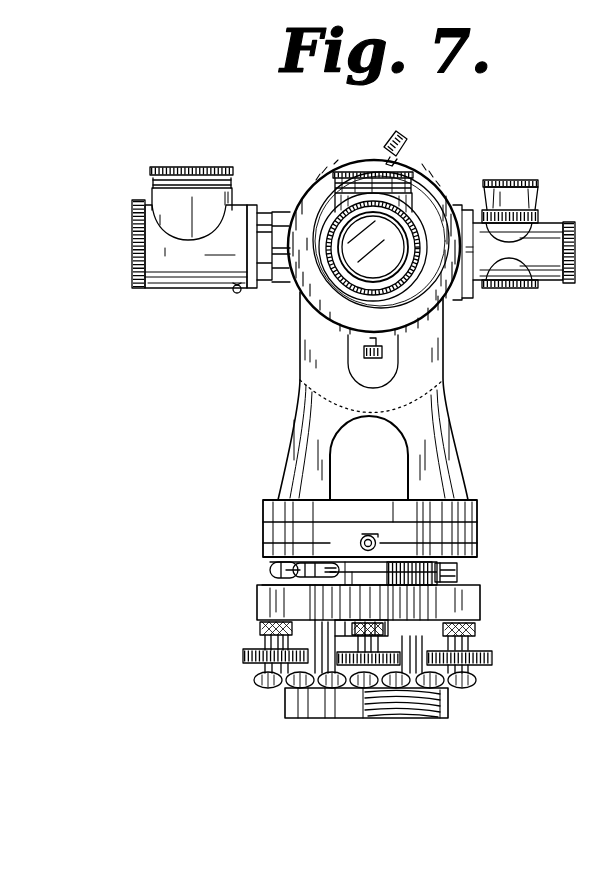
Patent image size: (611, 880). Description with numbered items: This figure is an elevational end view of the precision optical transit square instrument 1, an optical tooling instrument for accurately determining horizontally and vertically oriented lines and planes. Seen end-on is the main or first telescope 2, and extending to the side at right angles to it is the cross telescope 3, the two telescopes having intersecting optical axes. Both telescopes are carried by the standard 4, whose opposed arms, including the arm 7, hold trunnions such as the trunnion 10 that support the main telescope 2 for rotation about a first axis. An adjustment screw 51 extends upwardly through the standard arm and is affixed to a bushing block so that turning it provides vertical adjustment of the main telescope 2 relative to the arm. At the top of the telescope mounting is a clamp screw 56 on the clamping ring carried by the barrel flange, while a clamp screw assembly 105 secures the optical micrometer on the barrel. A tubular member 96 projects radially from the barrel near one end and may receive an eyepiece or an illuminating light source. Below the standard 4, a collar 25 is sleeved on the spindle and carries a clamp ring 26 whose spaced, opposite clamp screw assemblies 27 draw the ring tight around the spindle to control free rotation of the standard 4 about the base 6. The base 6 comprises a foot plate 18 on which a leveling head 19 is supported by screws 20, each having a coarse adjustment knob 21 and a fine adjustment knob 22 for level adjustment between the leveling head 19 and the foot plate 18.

The precision optical transit square instrument 1 is at (294, 339).
The main or first telescope 2 is at (432, 198).
The cross telescope 3 is at (226, 290).
The standard 4 is at (295, 432).
The base 6 is at (481, 600).
The standard arm 7 is at (297, 398).
The trunnion 10 is at (298, 184).
The foot plate 18 is at (256, 680).
The leveling head 19 is at (258, 600).
The screws 20 is at (475, 645).
The coarse adjustment knob 21 is at (259, 628).
The fine adjustment knob 22 is at (241, 656).
The collar 25 is at (455, 562).
The clamp ring 26 is at (272, 565).
The clamp screw assemblies 27 is at (457, 573).
The adjustment screw 51 is at (383, 355).
The clamp screw 56 is at (395, 131).
The tubular member 96 is at (538, 212).
The clamp screw assembly 105 is at (238, 294).